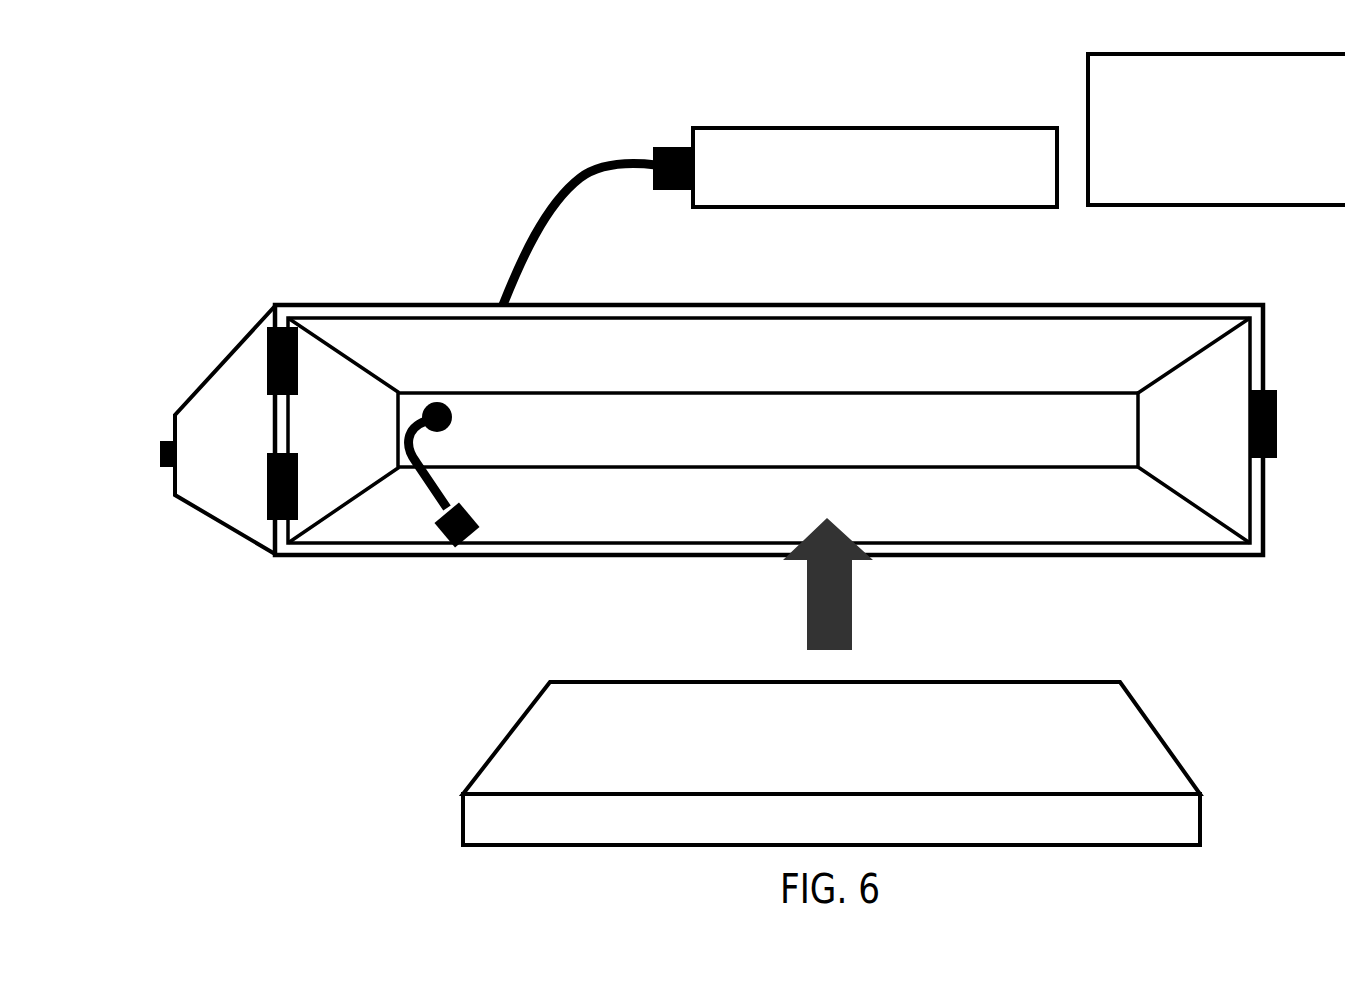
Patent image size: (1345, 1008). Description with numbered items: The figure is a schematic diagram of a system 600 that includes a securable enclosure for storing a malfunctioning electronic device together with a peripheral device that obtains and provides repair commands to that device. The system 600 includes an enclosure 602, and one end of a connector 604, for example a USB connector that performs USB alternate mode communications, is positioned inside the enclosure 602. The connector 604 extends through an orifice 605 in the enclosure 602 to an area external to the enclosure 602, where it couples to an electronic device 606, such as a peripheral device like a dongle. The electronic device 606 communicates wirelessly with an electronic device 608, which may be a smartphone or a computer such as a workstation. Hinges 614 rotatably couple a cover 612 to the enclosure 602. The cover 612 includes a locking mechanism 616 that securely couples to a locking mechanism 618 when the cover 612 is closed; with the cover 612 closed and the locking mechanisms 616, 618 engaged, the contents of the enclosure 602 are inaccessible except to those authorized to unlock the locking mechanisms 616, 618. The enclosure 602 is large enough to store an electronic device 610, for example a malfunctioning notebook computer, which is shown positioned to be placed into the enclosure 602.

The system 600 is at (392, 148).
The enclosure 602 is at (387, 516).
The connector 604 is at (563, 188).
The orifice 605 is at (450, 407).
The electronic device 606 is at (712, 160).
The electronic device 608 is at (1112, 68).
The electronic device 610 is at (540, 730).
The cover 612 is at (251, 355).
The hinges 614 is at (283, 327).
The locking mechanism 616 is at (169, 469).
The locking mechanism 618 is at (1258, 460).